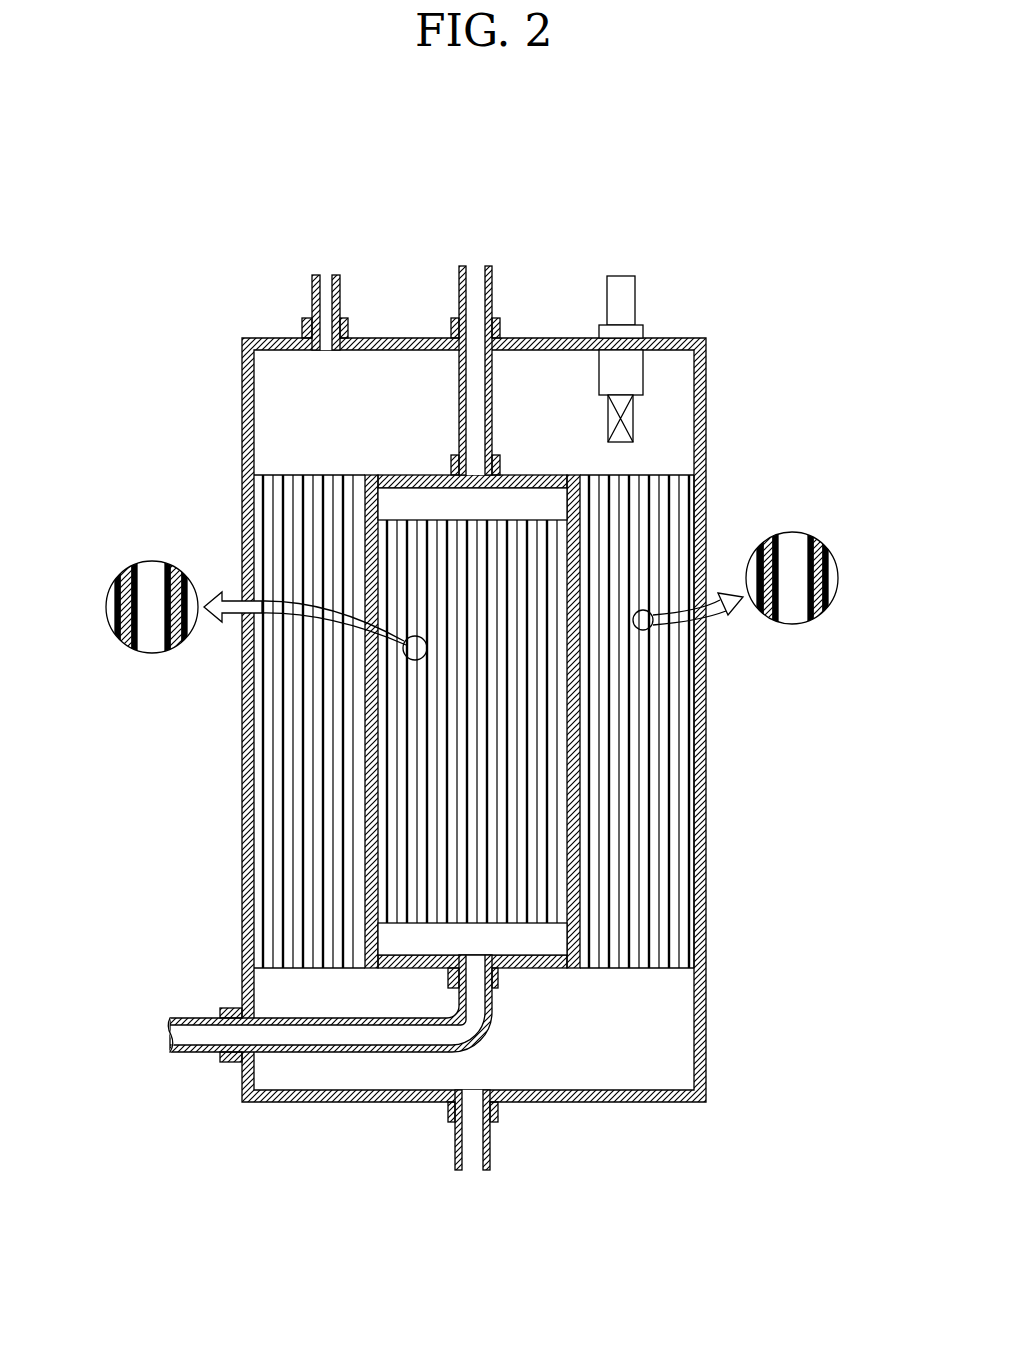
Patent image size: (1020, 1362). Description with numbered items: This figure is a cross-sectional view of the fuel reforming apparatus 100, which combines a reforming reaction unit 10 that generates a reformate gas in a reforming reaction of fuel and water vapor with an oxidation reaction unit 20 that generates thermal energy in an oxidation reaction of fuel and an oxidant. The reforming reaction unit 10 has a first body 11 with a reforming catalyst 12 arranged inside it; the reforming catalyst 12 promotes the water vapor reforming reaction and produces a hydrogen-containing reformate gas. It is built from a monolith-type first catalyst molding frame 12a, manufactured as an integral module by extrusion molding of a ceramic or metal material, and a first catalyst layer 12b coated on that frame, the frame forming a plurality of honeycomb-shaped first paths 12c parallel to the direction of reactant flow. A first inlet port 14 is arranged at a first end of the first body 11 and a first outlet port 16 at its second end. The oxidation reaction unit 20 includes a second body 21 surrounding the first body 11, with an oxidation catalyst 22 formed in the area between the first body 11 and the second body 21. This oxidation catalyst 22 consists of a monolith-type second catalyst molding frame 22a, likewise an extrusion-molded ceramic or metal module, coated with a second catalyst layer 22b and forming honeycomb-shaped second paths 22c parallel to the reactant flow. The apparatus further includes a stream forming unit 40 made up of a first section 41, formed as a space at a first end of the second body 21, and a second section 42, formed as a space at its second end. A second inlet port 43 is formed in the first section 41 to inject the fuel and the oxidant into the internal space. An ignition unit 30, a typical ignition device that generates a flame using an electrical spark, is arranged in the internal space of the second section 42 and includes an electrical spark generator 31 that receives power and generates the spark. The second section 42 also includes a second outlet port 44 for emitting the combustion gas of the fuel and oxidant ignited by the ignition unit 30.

The fuel reforming apparatus 100 is at (500, 177).
The reforming reaction unit 10 is at (313, 721).
The first body 11 is at (367, 537).
The reforming catalyst 12 is at (301, 720).
The first catalyst molding frame 12a is at (151, 607).
The first catalyst layer 12b is at (151, 607).
The first paths 12c is at (121, 568).
The first inlet port 14 is at (450, 980).
The first outlet port 16 is at (500, 465).
The oxidation reaction unit 20 is at (579, 721).
The second body 21 is at (706, 770).
The oxidation catalyst 22 is at (579, 721).
The second catalyst molding frame 22a is at (792, 578).
The second catalyst layer 22b is at (793, 578).
The second paths 22c is at (811, 540).
The ignition unit 30 is at (693, 333).
The electrical spark generator 31 is at (635, 408).
The stream forming unit 40 is at (231, 388).
The first section 41 is at (593, 1071).
The second section 42 is at (378, 371).
The second inlet port 43 is at (447, 1114).
The second outlet port 44 is at (301, 329).